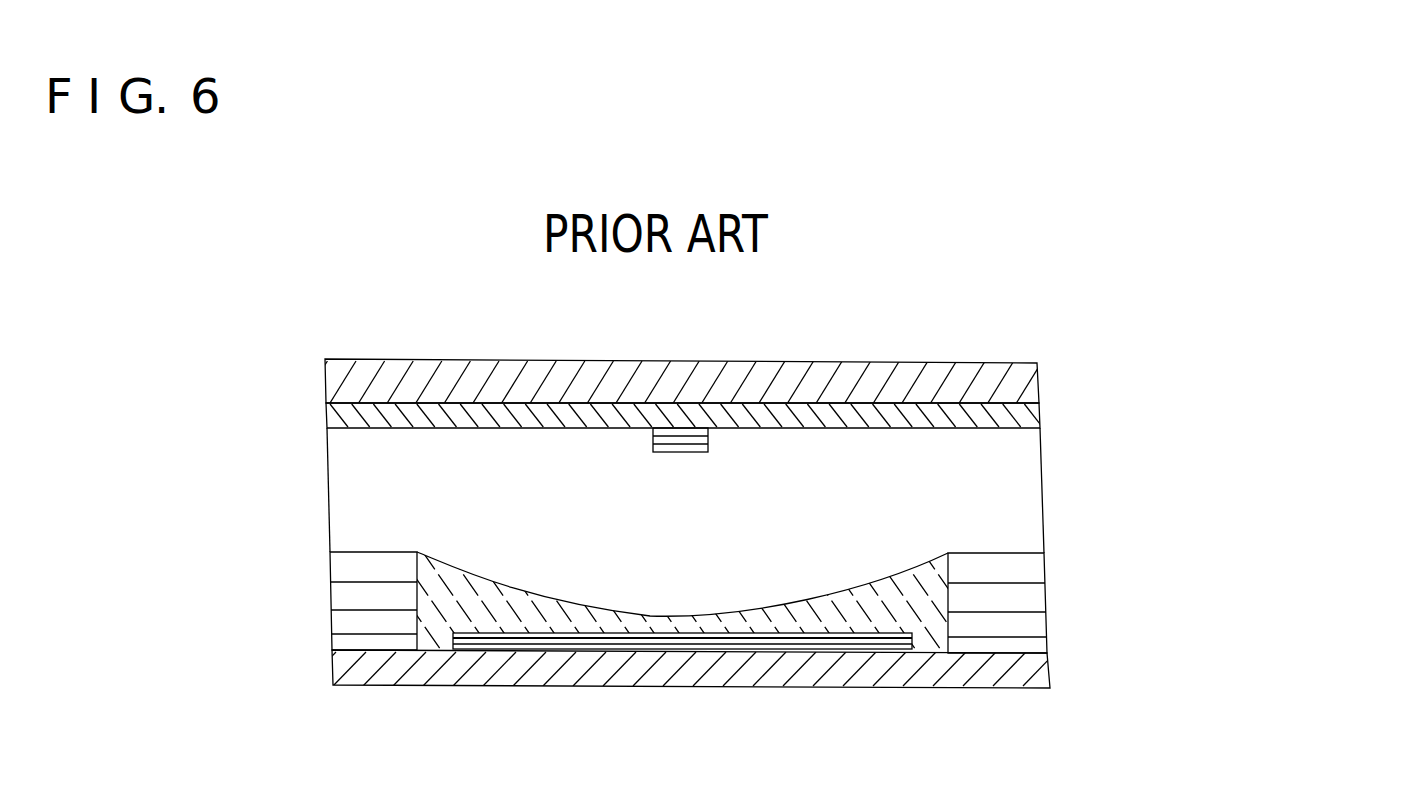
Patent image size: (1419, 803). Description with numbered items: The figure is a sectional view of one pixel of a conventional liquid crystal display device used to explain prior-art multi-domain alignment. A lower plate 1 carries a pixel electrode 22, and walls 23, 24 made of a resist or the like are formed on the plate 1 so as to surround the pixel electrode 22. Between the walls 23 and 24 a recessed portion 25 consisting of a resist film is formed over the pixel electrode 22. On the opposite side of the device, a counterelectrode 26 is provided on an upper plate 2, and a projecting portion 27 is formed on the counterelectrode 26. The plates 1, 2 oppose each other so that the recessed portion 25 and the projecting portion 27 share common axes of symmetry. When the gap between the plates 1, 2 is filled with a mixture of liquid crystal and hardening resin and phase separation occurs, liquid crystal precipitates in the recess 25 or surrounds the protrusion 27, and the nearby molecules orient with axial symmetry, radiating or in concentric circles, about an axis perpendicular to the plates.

The plate 1 is at (1027, 675).
The plate 2 is at (997, 382).
The pixel electrode 22 is at (657, 644).
The wall 23 is at (343, 623).
The wall 24 is at (1027, 598).
The recessed portion 25 is at (467, 587).
The counterelectrode 26 is at (1000, 418).
The projecting portion 27 is at (690, 443).